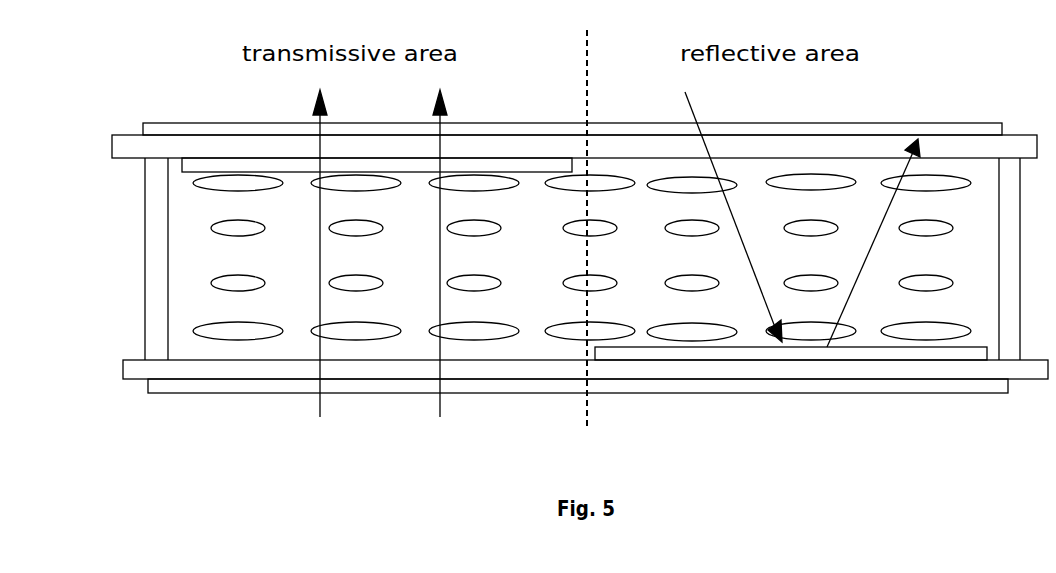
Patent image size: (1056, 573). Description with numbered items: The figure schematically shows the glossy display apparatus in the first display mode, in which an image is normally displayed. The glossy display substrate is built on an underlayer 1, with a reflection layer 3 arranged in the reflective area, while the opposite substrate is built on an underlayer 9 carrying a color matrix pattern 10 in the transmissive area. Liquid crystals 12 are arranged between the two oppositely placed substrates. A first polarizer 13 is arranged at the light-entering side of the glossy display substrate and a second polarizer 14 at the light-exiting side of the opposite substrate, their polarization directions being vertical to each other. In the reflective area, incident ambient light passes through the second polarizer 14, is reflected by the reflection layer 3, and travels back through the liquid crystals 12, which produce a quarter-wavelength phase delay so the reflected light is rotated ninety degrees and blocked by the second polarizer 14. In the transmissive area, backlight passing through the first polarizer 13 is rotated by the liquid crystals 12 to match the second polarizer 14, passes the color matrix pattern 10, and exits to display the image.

The underlayer 1 is at (771, 368).
The reflection layer 3 is at (715, 352).
The underlayer 9 is at (525, 152).
The color matrix pattern 10 is at (463, 165).
The liquid crystals 12 is at (943, 175).
The first polarizer 13 is at (835, 387).
The second polarizer 14 is at (880, 130).